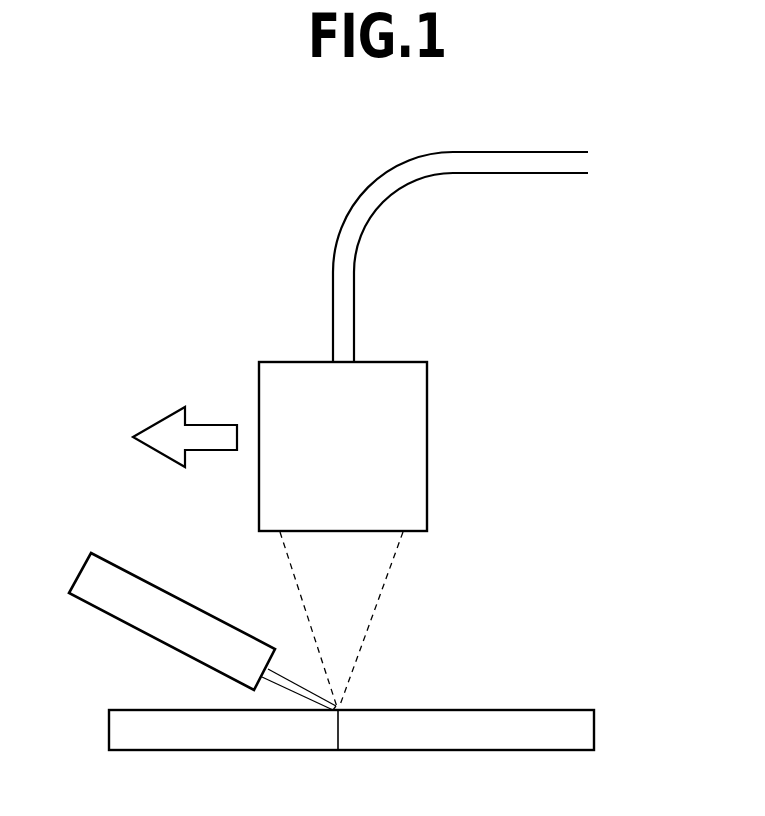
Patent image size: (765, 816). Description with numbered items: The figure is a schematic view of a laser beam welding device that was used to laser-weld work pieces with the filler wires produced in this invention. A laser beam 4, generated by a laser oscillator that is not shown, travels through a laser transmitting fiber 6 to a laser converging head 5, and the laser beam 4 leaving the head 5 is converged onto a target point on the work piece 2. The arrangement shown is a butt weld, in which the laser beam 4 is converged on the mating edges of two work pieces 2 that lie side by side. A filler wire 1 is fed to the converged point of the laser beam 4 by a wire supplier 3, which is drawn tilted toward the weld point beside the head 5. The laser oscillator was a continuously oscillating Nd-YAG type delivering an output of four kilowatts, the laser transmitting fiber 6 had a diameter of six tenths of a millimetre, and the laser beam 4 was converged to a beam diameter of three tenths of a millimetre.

The filler wire 1 is at (297, 682).
The work piece 2 is at (130, 733).
The wire supplier 3 is at (150, 617).
The laser beam 4 is at (312, 573).
The laser converging head 5 is at (408, 416).
The laser transmitting fiber 6 is at (522, 170).